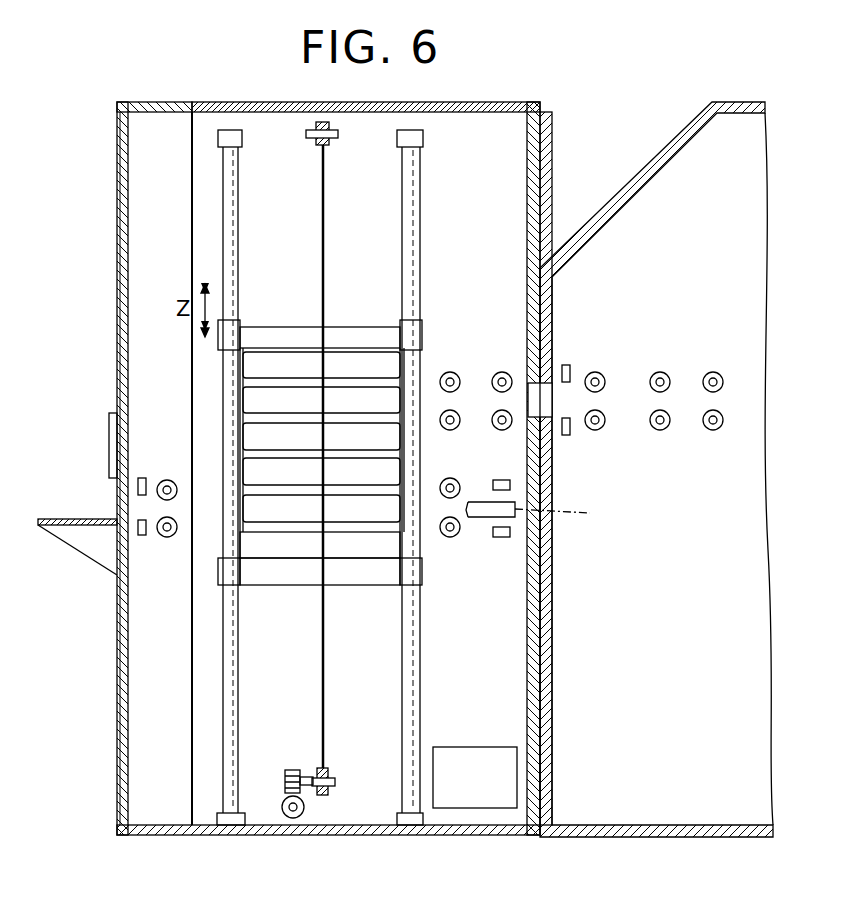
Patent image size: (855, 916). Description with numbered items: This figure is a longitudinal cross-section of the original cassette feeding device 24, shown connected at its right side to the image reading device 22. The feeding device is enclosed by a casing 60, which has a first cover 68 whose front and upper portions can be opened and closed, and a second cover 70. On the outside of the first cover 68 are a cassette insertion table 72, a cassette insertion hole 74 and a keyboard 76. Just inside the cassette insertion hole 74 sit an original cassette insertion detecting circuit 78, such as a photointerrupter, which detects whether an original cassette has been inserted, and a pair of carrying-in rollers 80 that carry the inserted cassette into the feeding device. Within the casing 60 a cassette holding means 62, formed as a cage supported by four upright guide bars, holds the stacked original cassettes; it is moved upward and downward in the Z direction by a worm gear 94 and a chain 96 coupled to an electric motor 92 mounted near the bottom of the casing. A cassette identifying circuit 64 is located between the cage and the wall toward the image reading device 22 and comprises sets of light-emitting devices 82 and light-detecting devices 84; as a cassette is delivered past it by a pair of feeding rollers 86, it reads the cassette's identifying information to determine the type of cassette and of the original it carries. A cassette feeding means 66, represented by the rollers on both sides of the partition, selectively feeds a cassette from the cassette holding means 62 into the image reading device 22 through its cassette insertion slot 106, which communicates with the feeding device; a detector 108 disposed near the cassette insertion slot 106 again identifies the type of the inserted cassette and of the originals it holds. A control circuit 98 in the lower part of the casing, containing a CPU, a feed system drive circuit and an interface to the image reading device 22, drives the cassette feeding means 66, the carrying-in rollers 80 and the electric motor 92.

The image reading device 22 is at (638, 839).
The original cassette feeding device 24 is at (113, 797).
The casing 60 is at (440, 836).
The cassette holding means 62 is at (363, 594).
The cassette identifying circuit 64 is at (530, 462).
The cassette feeding means 66 is at (470, 370).
The first cover 68 is at (150, 103).
The second cover 70 is at (475, 103).
The cassette insertion table 72 is at (78, 540).
The cassette insertion hole 74 is at (122, 508).
The keyboard 76 is at (109, 440).
The original cassette insertion detecting circuit 78 is at (143, 476).
The carrying-in rollers 80 is at (167, 479).
The light-emitting devices 82 is at (510, 485).
The light-detecting devices 84 is at (510, 534).
The feeding rollers 86 is at (452, 540).
The electric motor 92 is at (305, 806).
The worm gear 94 is at (290, 773).
The chain 96 is at (325, 730).
The control circuit 98 is at (492, 801).
The cassette insertion slot 106 is at (552, 400).
The detector 108 is at (566, 362).